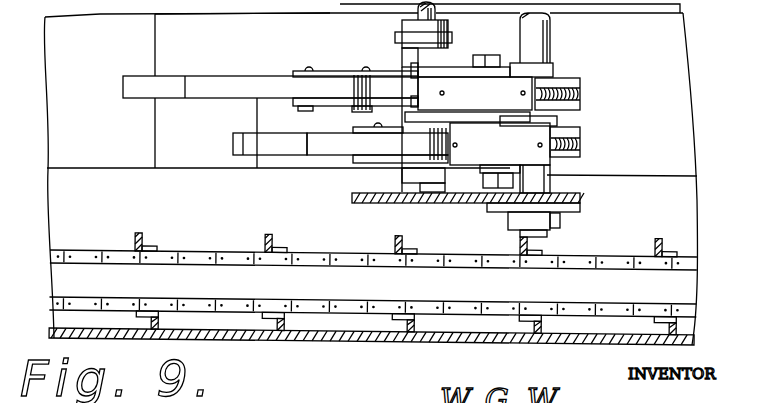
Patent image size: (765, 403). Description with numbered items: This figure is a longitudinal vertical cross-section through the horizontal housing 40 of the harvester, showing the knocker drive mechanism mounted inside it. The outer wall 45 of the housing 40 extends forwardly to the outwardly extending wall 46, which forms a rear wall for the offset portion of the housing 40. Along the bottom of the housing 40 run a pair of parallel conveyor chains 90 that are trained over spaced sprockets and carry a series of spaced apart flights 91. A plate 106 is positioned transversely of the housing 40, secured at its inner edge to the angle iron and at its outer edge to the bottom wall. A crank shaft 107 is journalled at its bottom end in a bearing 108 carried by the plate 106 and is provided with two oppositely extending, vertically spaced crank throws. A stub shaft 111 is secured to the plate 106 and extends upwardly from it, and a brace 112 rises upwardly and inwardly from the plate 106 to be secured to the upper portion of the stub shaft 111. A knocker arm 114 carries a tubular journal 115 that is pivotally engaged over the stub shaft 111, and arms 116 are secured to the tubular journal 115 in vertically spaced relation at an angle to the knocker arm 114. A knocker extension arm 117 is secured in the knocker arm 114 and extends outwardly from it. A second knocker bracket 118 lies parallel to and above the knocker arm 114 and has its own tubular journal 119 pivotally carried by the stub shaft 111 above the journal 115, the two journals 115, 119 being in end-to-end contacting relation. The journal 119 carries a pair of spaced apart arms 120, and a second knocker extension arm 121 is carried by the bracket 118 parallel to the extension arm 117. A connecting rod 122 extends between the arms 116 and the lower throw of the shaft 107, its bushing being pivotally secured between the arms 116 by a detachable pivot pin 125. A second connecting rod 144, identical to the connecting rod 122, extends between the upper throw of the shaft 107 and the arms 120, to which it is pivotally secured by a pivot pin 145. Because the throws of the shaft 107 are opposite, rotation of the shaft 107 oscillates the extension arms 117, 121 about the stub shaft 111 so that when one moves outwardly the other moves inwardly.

The housing 40 is at (362, 341).
The outer wall 45 is at (112, 57).
The outwardly extending wall 46 is at (214, 45).
The conveyor chains 90 is at (237, 297).
The flights 91 is at (268, 245).
The plate 106 is at (369, 194).
The shaft 107 is at (553, 50).
The bearing 108 is at (560, 221).
The stub shaft 111 is at (415, 9).
The brace 112 is at (404, 43).
The knocker arm 114 is at (363, 157).
The tubular journal 115 is at (378, 127).
The arms 116 is at (473, 167).
The knocker extension arm 117 is at (269, 141).
The second knocker bracket 118 is at (322, 77).
The tubular journal 119 is at (402, 62).
The arms 120 is at (455, 76).
The second knocker extension arm 121 is at (222, 86).
The connecting rod 122 is at (592, 143).
The pivot pin 125 is at (513, 183).
The second connecting rod 144 is at (592, 88).
The pivot pin 145 is at (490, 58).